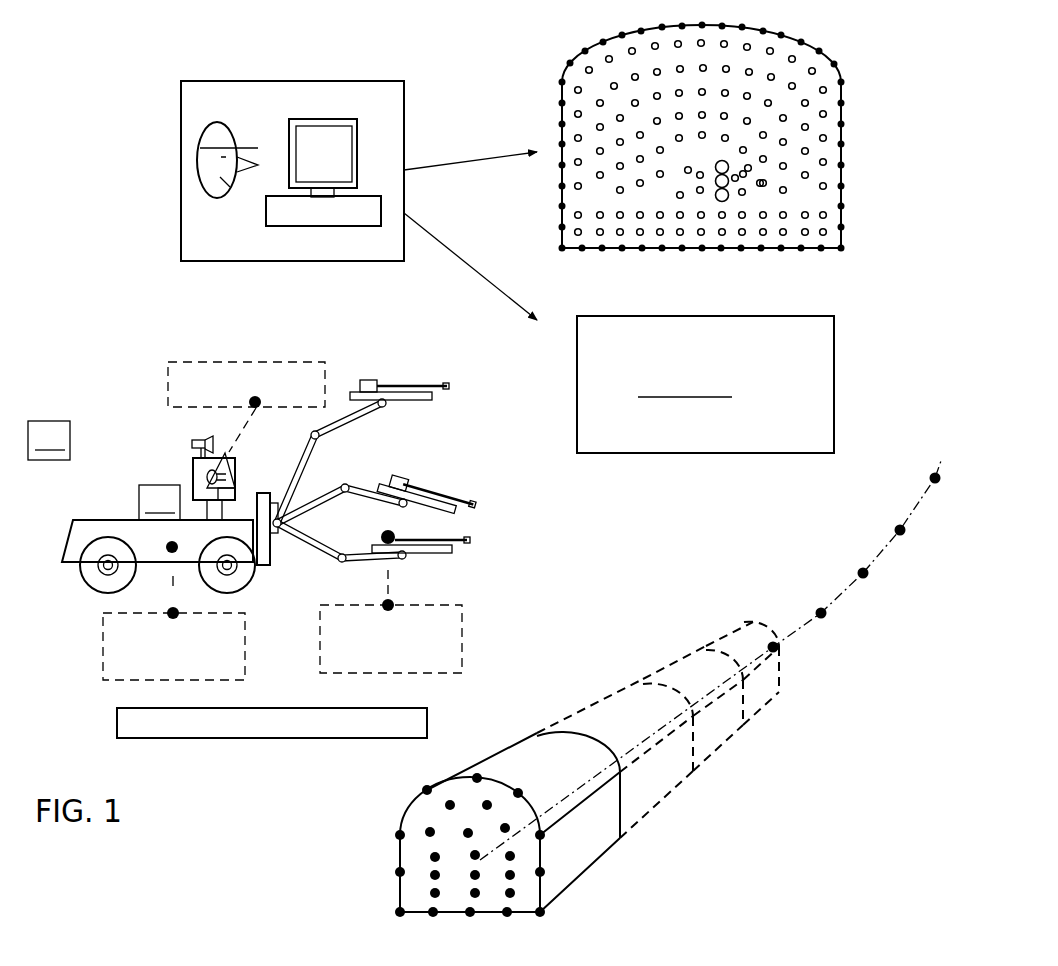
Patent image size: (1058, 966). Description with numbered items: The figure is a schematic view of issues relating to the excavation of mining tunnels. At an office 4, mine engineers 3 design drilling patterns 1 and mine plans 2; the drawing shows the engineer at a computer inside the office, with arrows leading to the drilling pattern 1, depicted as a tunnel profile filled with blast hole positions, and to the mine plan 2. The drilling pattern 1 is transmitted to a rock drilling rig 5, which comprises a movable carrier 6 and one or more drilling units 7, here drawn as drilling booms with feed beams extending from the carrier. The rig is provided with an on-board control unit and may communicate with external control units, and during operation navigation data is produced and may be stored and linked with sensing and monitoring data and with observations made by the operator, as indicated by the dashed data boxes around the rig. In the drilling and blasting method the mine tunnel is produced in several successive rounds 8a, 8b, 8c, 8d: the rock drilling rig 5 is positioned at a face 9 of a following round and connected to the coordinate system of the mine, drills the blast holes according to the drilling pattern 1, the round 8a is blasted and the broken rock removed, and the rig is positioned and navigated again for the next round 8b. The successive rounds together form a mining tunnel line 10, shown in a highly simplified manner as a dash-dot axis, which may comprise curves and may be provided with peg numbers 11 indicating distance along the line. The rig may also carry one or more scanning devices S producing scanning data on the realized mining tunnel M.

The drilling pattern 1 is at (617, 82).
The mine plan 2 is at (790, 333).
The mine engineer 3 is at (213, 163).
The office 4 is at (385, 100).
The rock drilling rig 5 is at (118, 380).
The movable carrier 6 is at (140, 463).
The drilling unit 7 is at (435, 477).
The round 8a is at (593, 838).
The round 8b is at (656, 780).
The round 8c is at (720, 730).
The round 8d is at (758, 686).
The face 9 is at (418, 822).
The mining tunnel line 10 is at (560, 802).
The peg number 11 is at (818, 608).
The scanning device S is at (202, 447).
The realized mining tunnel M is at (625, 623).